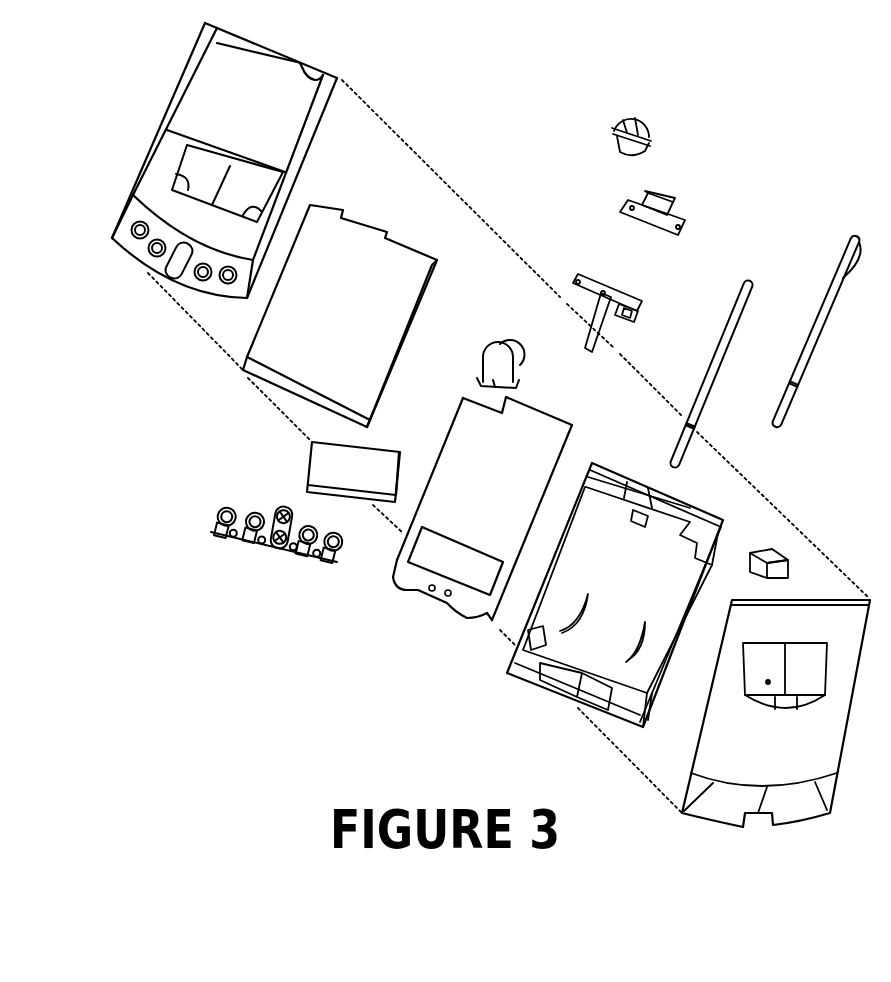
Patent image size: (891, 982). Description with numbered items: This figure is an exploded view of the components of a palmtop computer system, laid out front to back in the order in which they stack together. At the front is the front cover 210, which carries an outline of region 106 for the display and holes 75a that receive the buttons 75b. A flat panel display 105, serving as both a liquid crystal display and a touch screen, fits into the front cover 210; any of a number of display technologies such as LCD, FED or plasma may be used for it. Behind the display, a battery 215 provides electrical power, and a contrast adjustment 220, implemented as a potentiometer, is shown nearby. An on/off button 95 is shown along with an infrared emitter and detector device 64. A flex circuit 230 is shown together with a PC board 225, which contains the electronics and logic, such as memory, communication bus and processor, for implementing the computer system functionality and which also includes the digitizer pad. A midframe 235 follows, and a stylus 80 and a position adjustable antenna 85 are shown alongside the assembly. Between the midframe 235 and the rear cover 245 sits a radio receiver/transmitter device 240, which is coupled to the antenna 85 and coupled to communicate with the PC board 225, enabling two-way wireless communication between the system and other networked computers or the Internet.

The front cover 210 is at (271, 126).
The region 106 is at (187, 165).
The holes 75a is at (135, 222).
The flat panel display 105 is at (360, 322).
The contrast adjustment 220 is at (498, 340).
The battery 215 is at (373, 475).
The buttons 75b is at (223, 508).
The PC board 225 is at (511, 491).
The midframe 235 is at (646, 582).
The rear cover 245 is at (793, 752).
The radio receiver/transmitter device 240 is at (767, 551).
The on/off button 95 is at (649, 121).
The infrared emitter and detector device 64 is at (664, 197).
The flex circuit 230 is at (619, 290).
The position adjustable antenna 85 is at (736, 338).
The stylus 80 is at (829, 313).